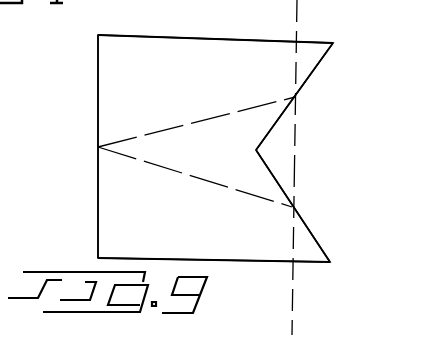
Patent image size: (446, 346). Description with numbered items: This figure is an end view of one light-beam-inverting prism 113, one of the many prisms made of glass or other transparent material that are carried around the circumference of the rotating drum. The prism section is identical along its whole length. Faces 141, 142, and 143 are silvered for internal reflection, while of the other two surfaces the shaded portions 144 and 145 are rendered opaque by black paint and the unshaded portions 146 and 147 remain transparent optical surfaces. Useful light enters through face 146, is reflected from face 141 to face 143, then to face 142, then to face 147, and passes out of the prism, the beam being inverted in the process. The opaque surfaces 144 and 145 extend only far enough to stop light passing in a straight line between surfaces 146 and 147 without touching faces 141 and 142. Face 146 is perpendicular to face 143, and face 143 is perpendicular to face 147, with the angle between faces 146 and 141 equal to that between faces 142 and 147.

The prism 113 is at (97, 84).
The face 141 is at (310, 75).
The face 142 is at (305, 222).
The face 143 is at (95, 200).
The shaded portion 144 is at (211, 23).
The shaded portion 145 is at (219, 264).
The unshaded portion 146 is at (315, 42).
The unshaded portion 147 is at (312, 262).